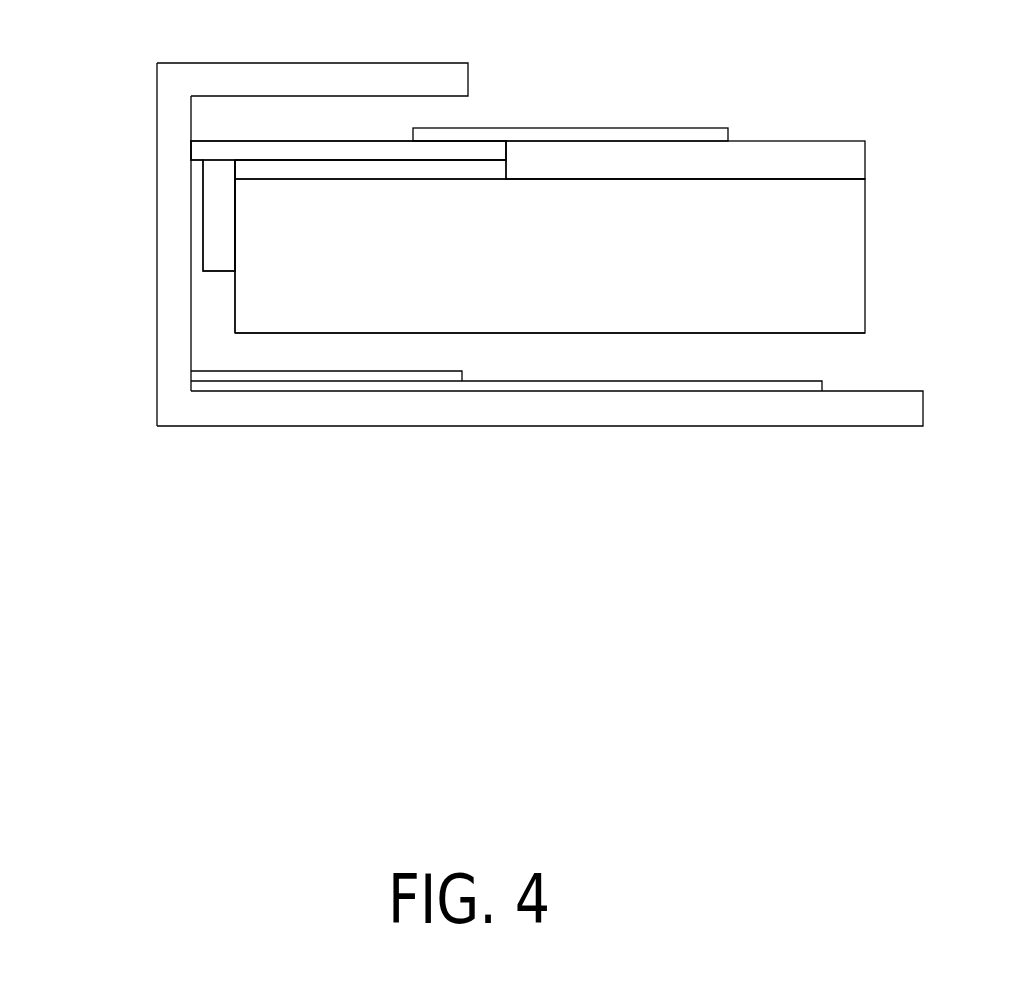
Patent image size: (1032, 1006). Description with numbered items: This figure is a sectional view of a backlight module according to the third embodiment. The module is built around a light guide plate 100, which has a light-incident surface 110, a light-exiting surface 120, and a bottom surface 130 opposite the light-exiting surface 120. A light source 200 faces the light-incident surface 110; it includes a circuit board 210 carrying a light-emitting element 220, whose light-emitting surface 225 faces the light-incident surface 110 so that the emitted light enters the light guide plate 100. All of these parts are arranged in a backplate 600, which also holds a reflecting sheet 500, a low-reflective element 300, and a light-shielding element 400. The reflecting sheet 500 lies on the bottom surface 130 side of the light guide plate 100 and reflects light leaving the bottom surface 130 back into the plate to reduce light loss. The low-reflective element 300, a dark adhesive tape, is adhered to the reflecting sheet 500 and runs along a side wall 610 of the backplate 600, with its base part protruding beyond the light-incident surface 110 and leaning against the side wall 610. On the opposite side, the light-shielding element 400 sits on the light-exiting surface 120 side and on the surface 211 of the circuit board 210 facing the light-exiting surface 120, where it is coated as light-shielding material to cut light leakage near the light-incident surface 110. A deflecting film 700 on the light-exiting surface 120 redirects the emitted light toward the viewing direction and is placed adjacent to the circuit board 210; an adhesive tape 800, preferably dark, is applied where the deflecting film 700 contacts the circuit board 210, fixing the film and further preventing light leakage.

The light guide plate 100 is at (845, 247).
The light-incident surface 110 is at (233, 305).
The light-exiting surface 120 is at (775, 178).
The bottom surface 130 is at (865, 334).
The light source 200 is at (68, 126).
The circuit board 210 is at (207, 150).
The surface of the circuit board 211 is at (343, 168).
The light-emitting element 220 is at (200, 192).
The light-emitting surface 225 is at (238, 216).
The low-reflective element 300 is at (233, 375).
The light-shielding element 400 is at (385, 172).
The reflecting sheet 500 is at (278, 388).
The backplate 600 is at (350, 410).
The side wall 610 is at (172, 358).
The deflecting film 700 is at (826, 153).
The adhesive tape 800 is at (589, 135).